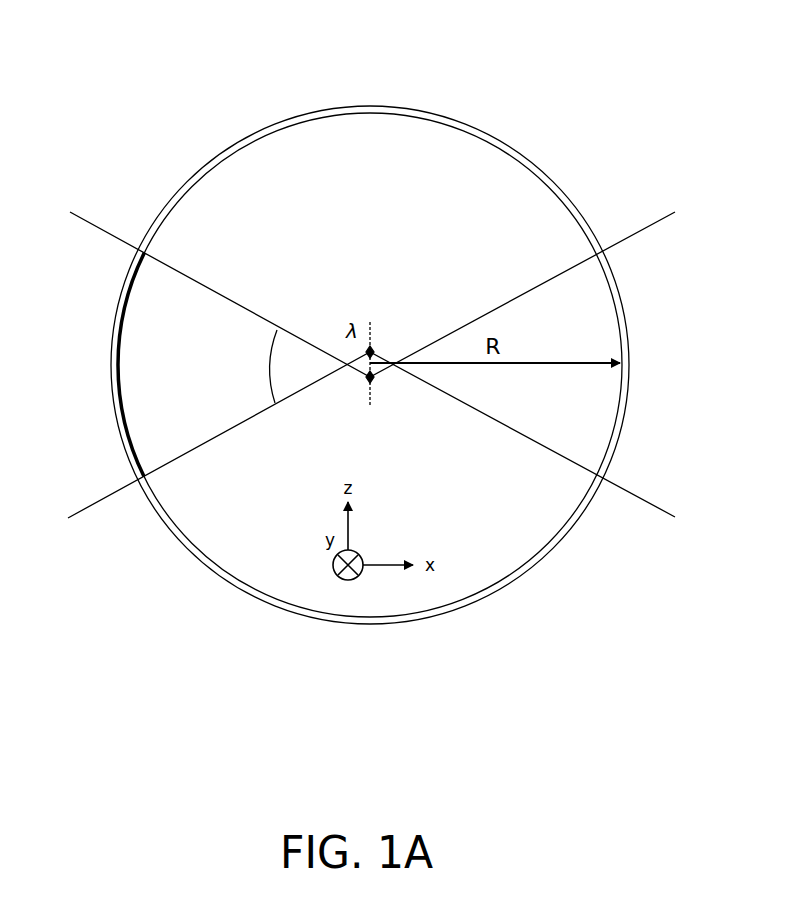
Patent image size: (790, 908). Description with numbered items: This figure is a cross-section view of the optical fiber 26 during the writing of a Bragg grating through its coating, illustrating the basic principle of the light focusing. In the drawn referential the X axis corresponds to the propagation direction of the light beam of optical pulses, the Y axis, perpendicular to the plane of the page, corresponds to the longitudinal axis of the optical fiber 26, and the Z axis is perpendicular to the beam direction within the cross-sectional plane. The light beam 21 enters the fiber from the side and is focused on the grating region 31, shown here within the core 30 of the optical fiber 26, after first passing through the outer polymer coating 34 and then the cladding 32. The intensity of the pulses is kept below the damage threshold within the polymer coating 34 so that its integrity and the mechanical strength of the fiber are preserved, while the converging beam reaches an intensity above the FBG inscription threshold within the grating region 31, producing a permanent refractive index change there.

The light beam 21 is at (97, 225).
The optical fiber 26 is at (588, 137).
The core 30 is at (377, 353).
The grating region 31 is at (377, 372).
The cladding 32 is at (370, 365).
The polymer coating 34 is at (332, 107).